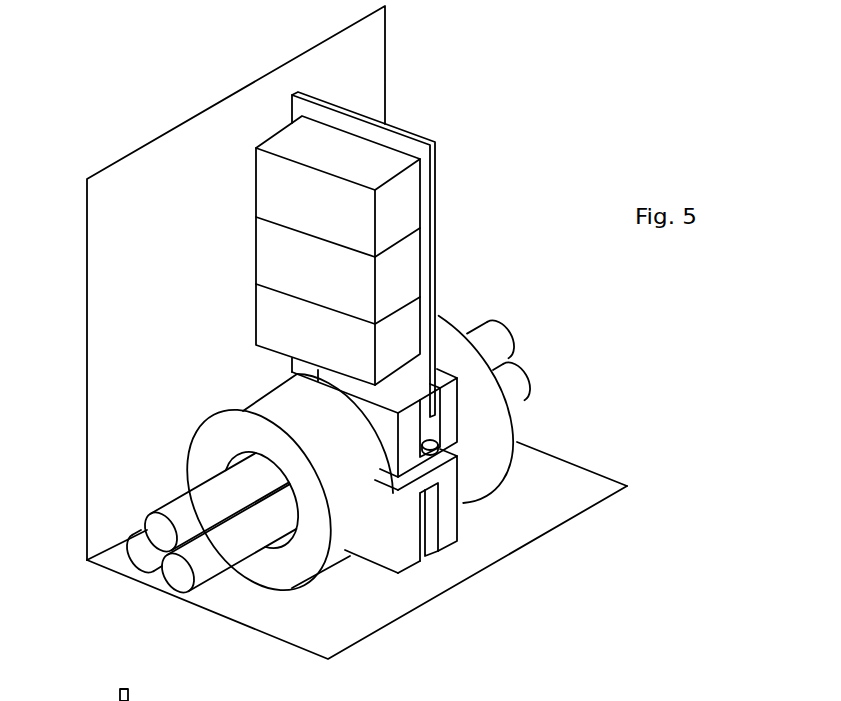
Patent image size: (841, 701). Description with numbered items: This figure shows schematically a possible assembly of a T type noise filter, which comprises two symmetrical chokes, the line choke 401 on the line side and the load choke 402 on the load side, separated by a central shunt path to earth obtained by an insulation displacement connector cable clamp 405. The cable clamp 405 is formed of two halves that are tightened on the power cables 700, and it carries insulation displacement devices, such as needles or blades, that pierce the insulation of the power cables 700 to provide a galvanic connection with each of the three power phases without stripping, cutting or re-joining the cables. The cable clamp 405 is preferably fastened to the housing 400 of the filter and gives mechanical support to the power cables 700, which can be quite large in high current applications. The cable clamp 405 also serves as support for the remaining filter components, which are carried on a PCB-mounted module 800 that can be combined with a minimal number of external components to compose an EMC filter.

The housing 400 is at (363, 628).
The line choke 401 is at (348, 547).
The load choke 402 is at (572, 475).
The insulation displacement connector (IDC) cable clamp 405 is at (443, 538).
The power cables 700 is at (160, 532).
The PCB-mounted module 800 is at (438, 190).